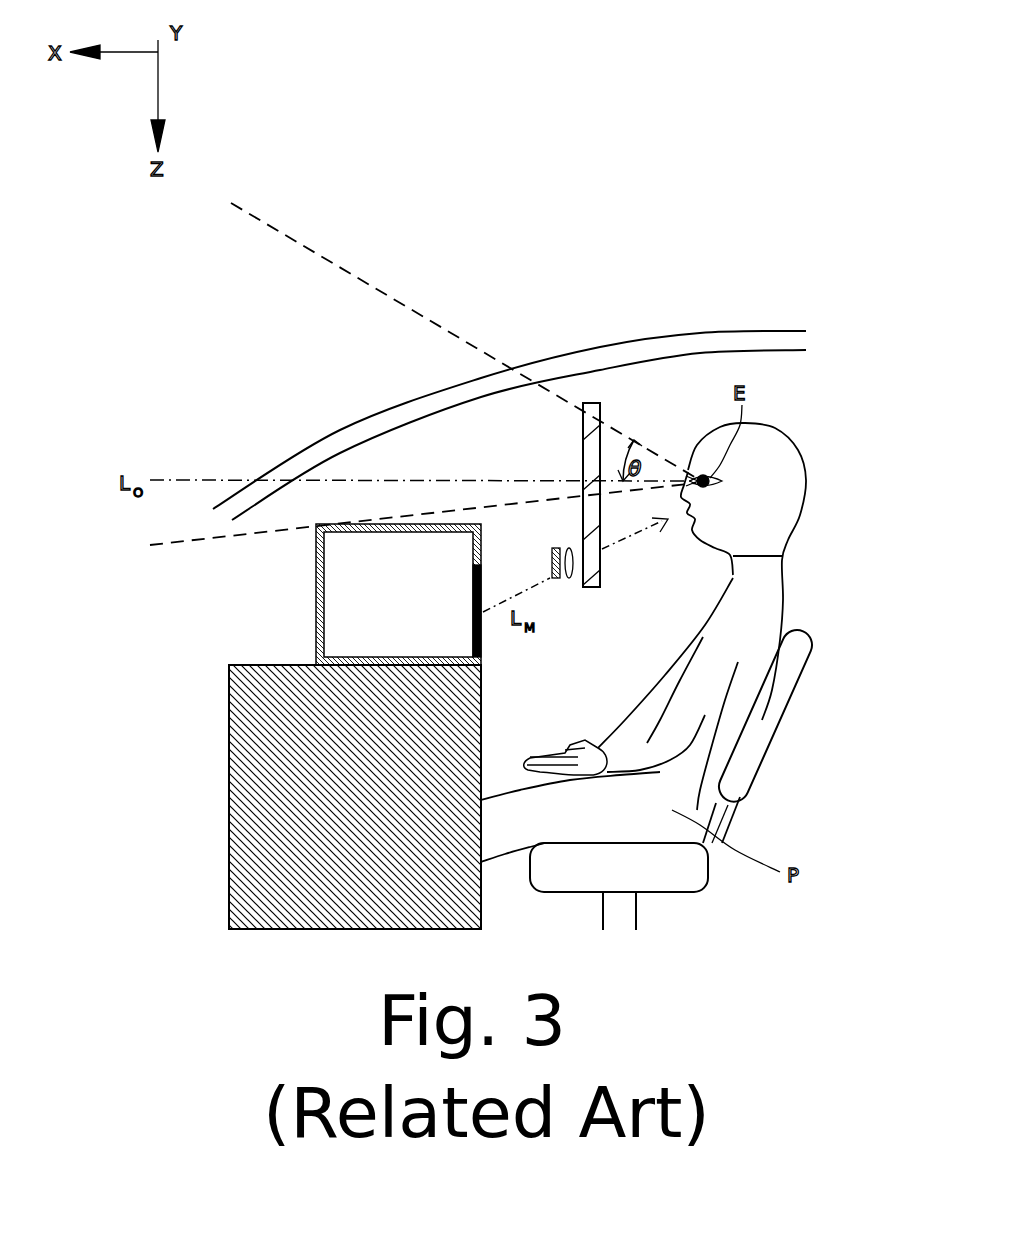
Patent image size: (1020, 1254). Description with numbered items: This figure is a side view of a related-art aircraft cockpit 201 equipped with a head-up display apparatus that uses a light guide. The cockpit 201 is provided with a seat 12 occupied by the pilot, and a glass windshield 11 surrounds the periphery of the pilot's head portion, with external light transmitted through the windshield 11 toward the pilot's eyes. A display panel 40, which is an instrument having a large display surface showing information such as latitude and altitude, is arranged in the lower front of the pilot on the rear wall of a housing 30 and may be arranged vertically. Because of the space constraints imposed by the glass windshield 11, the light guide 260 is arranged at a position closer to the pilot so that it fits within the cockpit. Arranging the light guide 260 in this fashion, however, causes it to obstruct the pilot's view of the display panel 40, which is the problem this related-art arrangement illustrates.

The aircraft cockpit 201 is at (646, 152).
The glass windshield 11 is at (743, 330).
The seat 12 is at (780, 728).
The housing 30 is at (444, 524).
The display panel 40 is at (473, 612).
The light guide 260 is at (591, 403).